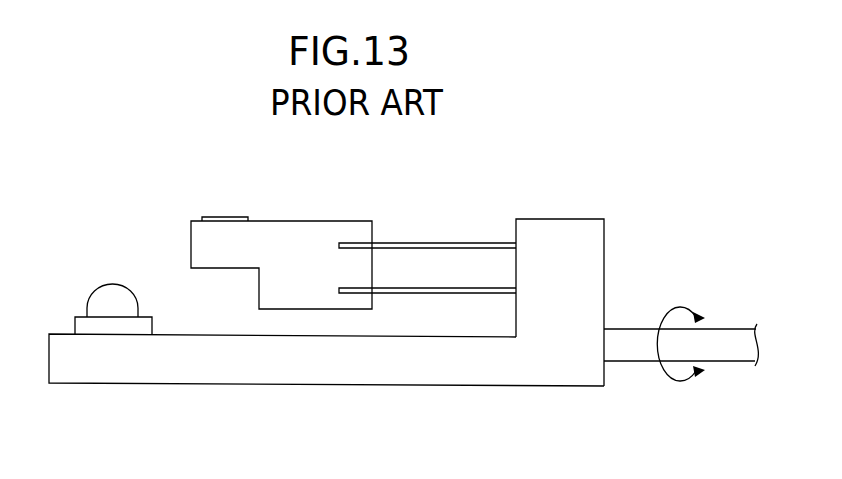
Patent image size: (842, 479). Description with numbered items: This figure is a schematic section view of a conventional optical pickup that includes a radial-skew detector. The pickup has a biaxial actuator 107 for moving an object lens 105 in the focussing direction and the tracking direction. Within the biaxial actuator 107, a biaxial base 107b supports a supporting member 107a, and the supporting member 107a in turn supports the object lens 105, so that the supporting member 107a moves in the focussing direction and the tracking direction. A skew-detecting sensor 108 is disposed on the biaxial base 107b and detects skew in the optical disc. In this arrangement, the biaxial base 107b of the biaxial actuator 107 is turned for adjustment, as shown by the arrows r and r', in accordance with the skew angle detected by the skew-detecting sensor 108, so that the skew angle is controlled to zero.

The object lens 105 is at (224, 217).
The biaxial actuator 107 is at (403, 284).
The supporting member 107a is at (303, 243).
The biaxial base 107b is at (359, 374).
The skew-detecting sensor 108 is at (113, 284).